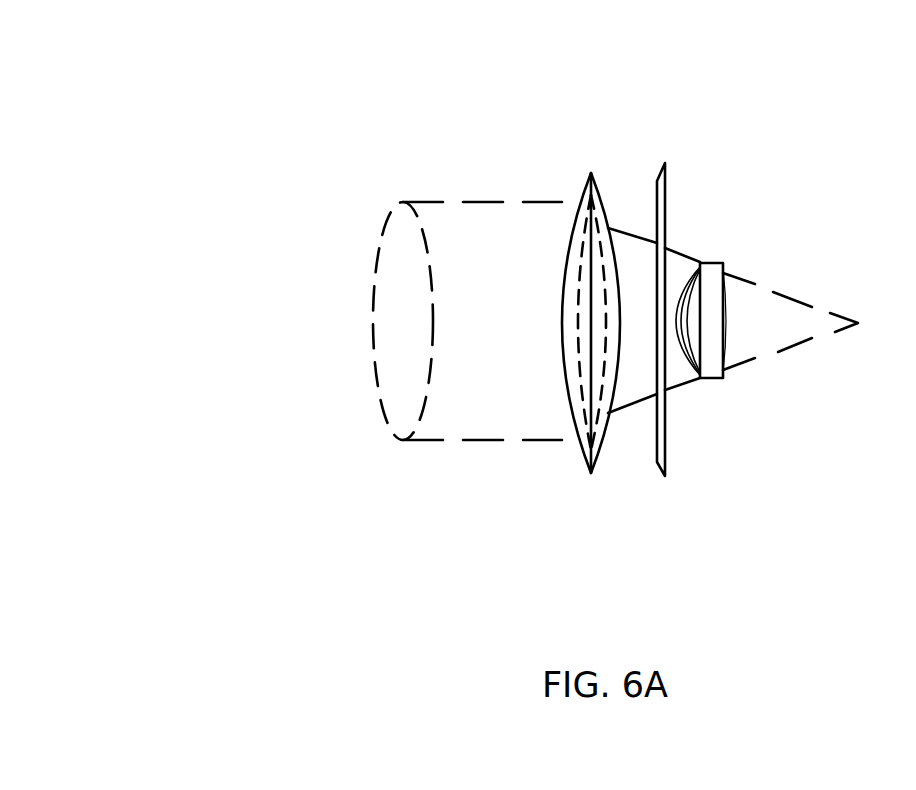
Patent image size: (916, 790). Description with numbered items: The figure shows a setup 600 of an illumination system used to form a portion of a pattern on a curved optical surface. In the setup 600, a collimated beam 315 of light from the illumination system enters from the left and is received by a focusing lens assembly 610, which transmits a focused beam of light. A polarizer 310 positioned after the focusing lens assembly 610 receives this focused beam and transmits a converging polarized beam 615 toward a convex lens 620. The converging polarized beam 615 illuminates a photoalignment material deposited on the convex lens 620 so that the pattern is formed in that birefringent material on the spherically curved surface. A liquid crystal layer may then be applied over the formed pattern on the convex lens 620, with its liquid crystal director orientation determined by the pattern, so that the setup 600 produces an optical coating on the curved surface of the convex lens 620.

The setup 600 is at (530, 296).
The collimated beam 315 is at (405, 285).
The focusing lens assembly 610 is at (575, 385).
The polarizer 310 is at (662, 212).
The converging polarized beam 615 is at (665, 253).
The convex lens 620 is at (710, 347).